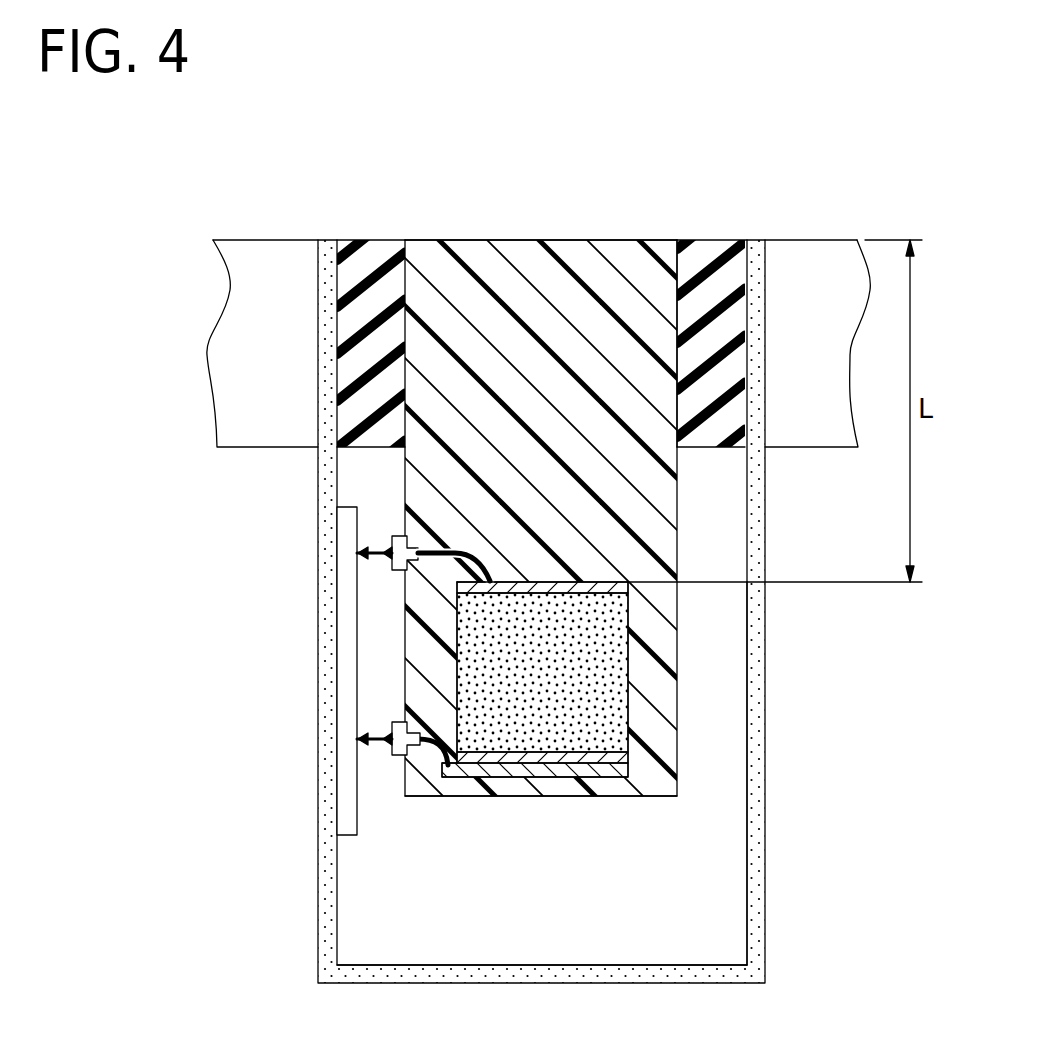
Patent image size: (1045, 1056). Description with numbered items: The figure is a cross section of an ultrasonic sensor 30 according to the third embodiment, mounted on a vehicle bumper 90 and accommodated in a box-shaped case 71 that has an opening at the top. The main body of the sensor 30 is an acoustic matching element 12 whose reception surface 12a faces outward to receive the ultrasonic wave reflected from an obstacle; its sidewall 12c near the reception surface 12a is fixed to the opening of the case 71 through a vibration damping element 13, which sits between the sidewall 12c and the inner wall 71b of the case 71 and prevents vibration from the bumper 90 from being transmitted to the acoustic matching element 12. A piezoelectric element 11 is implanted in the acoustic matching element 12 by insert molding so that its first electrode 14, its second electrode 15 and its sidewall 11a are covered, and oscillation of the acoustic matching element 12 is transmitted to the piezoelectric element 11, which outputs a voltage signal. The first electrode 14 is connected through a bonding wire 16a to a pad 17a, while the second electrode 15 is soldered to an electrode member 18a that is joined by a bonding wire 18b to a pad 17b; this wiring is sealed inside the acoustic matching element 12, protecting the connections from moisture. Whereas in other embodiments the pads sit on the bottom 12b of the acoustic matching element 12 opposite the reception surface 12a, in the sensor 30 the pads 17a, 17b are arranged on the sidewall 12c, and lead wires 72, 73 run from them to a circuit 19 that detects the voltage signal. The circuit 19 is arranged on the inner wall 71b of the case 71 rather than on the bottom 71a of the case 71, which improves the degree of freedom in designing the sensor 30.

The bumper 90 is at (281, 250).
The vibration damping element 13 is at (374, 250).
The reception surface 12a is at (568, 240).
The sidewall 12c is at (677, 272).
The ultrasonic sensor 30 is at (838, 204).
The acoustic matching element 12 is at (658, 476).
The bonding wire 16a is at (446, 549).
The pad 17a is at (392, 541).
The lead wire 72 is at (377, 558).
The piezoelectric element 11 is at (443, 623).
The sidewall of the piezoelectric element 11a is at (628, 646).
The first electrode 14 is at (628, 590).
The second electrode 15 is at (628, 758).
The pad 17b is at (392, 724).
The lead wire 73 is at (375, 742).
The bonding wire 18b is at (432, 753).
The electrode member 18a is at (582, 780).
The circuit 19 is at (352, 836).
The case 71 is at (756, 862).
The bottom 71a is at (368, 966).
The inner wall 71b is at (748, 911).
The bottom 12b is at (493, 797).